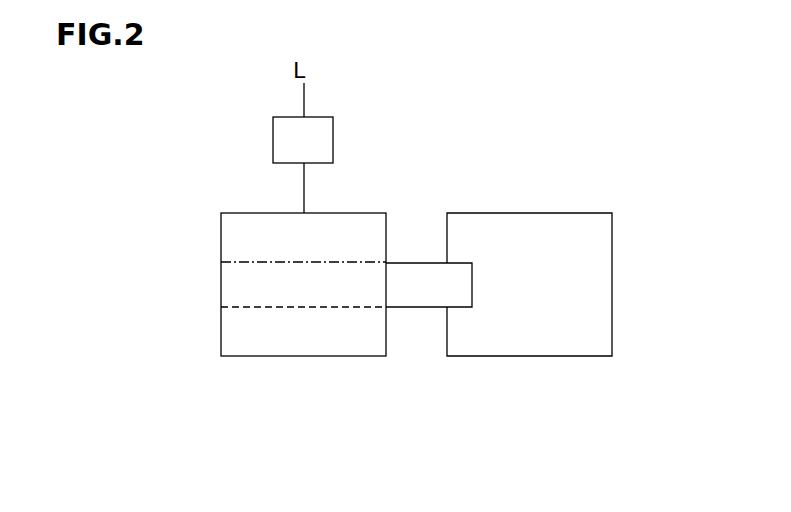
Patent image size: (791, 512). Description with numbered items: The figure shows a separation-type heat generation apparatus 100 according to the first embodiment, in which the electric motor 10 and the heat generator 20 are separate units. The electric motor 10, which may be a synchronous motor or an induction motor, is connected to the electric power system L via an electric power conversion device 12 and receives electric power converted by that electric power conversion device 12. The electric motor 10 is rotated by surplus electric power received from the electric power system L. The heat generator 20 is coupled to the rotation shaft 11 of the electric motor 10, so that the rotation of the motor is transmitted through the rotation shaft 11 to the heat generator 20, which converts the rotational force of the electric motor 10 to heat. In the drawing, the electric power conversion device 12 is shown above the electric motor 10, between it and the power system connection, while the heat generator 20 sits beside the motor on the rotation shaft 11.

The heat generation apparatus 100 is at (470, 133).
The electric motor 10 is at (305, 357).
The rotation shaft 11 is at (410, 300).
The electric power conversion device 12 is at (325, 142).
The heat generator 20 is at (532, 347).